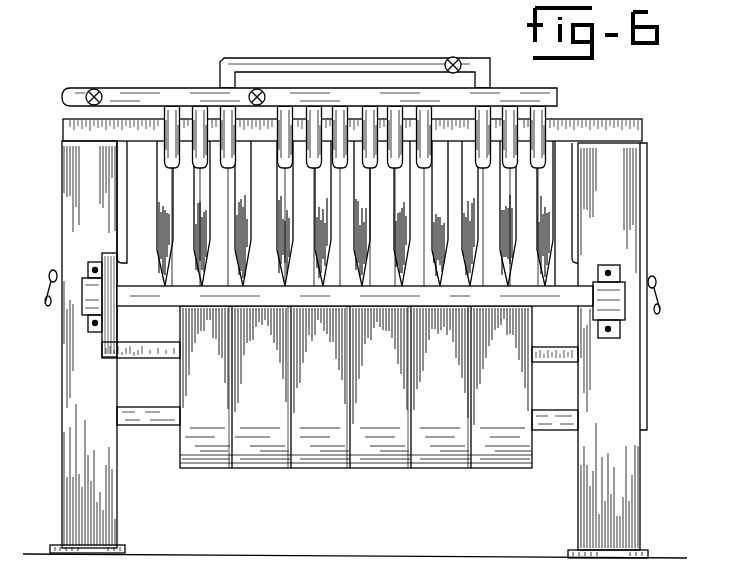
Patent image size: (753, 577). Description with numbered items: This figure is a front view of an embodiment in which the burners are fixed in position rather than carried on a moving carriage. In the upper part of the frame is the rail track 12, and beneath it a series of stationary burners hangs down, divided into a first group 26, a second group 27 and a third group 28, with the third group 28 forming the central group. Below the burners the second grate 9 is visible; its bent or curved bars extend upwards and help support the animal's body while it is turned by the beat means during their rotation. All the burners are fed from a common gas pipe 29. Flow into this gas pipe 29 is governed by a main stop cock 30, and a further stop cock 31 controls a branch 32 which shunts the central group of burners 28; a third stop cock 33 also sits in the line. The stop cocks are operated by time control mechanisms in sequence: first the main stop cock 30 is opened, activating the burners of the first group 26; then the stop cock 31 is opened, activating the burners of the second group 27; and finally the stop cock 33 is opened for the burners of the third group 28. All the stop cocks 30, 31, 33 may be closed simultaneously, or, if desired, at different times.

The second grate 9 is at (326, 238).
The rail track 12 is at (613, 121).
The first group of burners 26 is at (147, 170).
The second group of burners 27 is at (548, 170).
The third group of burners 28 is at (268, 170).
The gas pipe 29 is at (71, 91).
The main stop cock 30 is at (97, 89).
The stop cock 31 is at (466, 64).
The branch 32 is at (352, 62).
The stop cock 33 is at (263, 90).